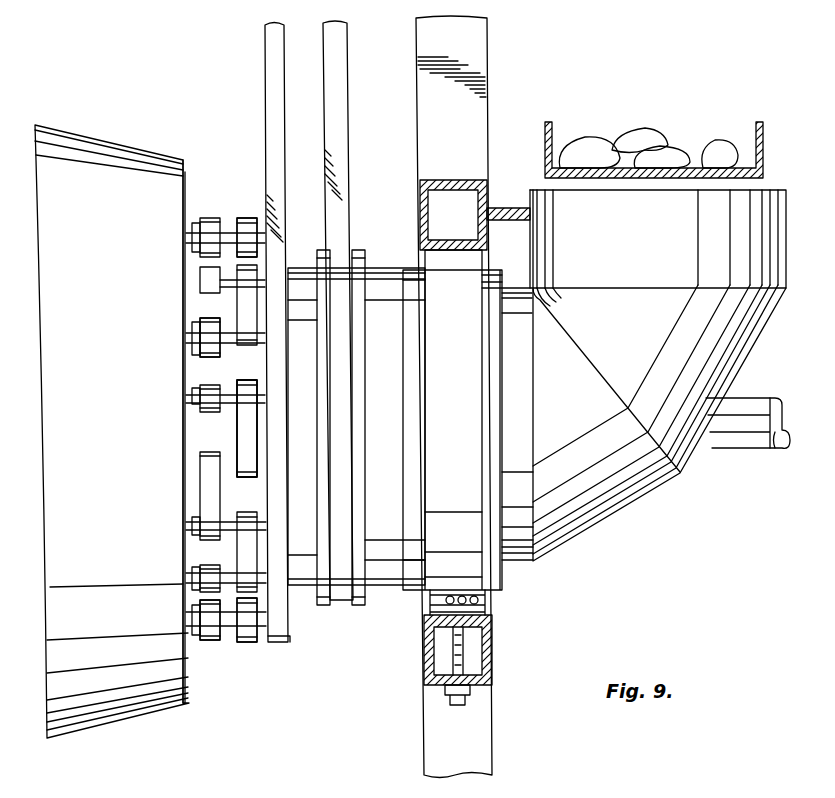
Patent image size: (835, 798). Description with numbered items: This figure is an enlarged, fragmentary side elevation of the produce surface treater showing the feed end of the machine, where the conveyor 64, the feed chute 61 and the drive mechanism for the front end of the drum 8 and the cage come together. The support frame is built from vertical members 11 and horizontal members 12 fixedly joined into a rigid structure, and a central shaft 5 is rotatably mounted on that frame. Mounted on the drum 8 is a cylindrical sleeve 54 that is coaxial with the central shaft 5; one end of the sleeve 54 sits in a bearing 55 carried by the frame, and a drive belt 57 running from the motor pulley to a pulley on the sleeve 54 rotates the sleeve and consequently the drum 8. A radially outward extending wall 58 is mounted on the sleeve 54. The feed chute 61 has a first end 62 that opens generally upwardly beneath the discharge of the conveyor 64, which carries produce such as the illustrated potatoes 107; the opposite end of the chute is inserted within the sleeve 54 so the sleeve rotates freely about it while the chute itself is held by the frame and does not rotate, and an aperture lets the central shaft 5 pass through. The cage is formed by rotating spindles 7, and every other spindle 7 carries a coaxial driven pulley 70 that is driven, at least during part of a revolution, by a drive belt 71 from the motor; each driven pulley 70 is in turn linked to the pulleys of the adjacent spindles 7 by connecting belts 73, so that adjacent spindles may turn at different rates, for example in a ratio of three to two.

The central shaft 5 is at (786, 432).
The rotating spindles 7 is at (186, 314).
The rotating peeling and dirt drum 8 is at (130, 148).
The vertical members 11 is at (492, 748).
The horizontal members 12 is at (460, 180).
The cylindrical sleeve 54 is at (398, 270).
The bearing 55 is at (490, 598).
The drive belt 57 is at (348, 118).
The radially outward extending wall 58 is at (188, 200).
The feed chute 61 is at (600, 515).
The first end of feed chute 62 is at (784, 190).
The conveyor 64 is at (766, 148).
The driven pulley 70 is at (262, 290).
The drive belt 71 is at (265, 114).
The connecting belts 73 is at (229, 358).
The potatoes 107 is at (596, 138).